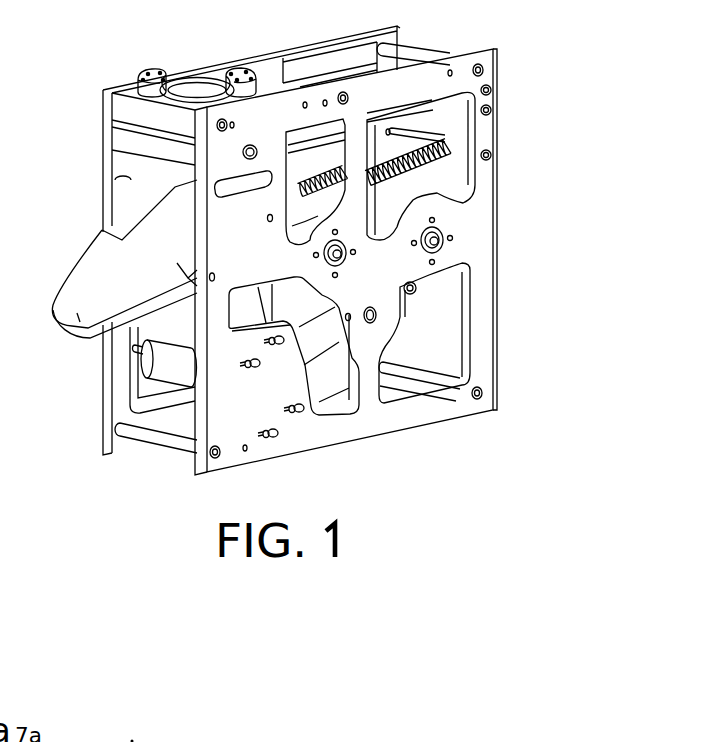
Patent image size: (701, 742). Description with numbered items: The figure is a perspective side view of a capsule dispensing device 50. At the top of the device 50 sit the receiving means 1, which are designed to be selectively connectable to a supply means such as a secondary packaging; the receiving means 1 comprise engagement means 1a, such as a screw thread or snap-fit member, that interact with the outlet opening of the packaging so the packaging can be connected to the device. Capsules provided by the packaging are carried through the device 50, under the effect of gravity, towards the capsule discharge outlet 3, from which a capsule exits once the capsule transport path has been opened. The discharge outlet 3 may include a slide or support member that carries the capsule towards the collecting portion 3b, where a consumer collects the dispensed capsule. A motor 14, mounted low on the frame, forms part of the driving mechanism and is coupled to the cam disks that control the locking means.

The receiving means 1 is at (205, 78).
The engagement means 1a is at (242, 75).
The capsule discharge outlet 3 is at (115, 180).
The collecting portion 3b is at (77, 313).
The motor 14 is at (173, 376).
The capsule dispensing device 50 is at (537, 112).